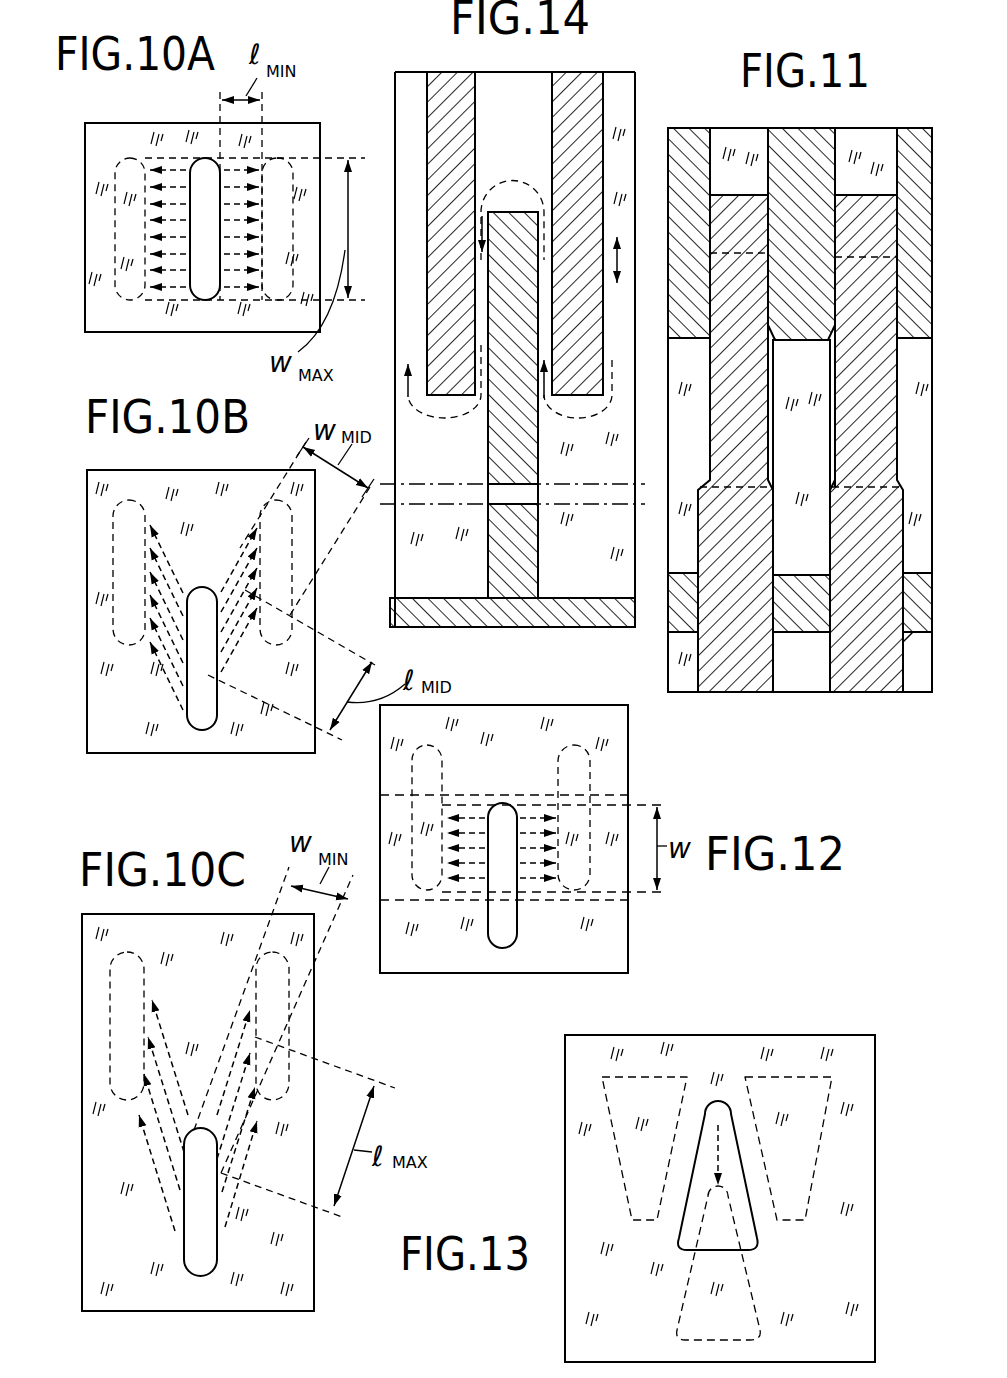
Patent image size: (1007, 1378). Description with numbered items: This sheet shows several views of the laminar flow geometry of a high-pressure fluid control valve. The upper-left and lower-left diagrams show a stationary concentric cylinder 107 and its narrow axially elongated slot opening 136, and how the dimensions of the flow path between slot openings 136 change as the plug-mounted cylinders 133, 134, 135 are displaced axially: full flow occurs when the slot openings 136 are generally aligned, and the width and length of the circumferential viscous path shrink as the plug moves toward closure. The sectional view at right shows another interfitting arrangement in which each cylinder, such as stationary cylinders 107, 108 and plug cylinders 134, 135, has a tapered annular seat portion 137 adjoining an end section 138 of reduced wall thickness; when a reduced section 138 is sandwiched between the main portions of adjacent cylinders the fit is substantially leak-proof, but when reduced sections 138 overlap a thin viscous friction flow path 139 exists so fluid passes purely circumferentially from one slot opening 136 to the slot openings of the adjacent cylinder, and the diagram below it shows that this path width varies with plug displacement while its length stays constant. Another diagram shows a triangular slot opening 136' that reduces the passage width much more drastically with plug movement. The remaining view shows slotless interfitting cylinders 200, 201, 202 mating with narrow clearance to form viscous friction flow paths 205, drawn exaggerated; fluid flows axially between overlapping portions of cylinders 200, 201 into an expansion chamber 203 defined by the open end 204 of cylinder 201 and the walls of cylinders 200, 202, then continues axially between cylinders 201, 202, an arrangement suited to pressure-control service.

In FIG. 10A, the concentric cylinder 107 is at (100, 148).
In FIG. 10B, the concentric cylinder 107 is at (144, 724).
In FIG. 10C, the concentric cylinder 107 is at (147, 1262).
In FIG. 11, the concentric cylinder 107 is at (860, 683).
In FIG. 11, the concentric cylinder 108 is at (732, 682).
In FIG. 14, the concentric cylinder 133 is at (519, 374).
In FIG. 11, the concentric cylinder 134 is at (802, 632).
In FIG. 12, the concentric cylinder 134 is at (615, 941).
In FIG. 13, the concentric cylinder 134 is at (721, 1055).
In FIG. 11, the concentric cylinder 135 is at (923, 634).
In FIG. 10A, the slot opening 136 is at (206, 267).
In FIG. 10B, the slot opening 136 is at (200, 695).
In FIG. 10C, the slot opening 136 is at (194, 1242).
In FIG. 11, the slot opening 136 is at (801, 584).
In FIG. 12, the slot opening 136 is at (533, 879).
In FIG. 13, the triangular slot opening 136' is at (755, 1195).
In FIG. 11, the tapered annular seat portion 137 is at (772, 343).
In FIG. 11, the end section of reduced wall thickness 138 is at (830, 403).
In FIG. 11, the viscous friction flow path 139 is at (835, 452).
In FIG. 12, the viscous friction flow path 139 is at (530, 800).
In FIG. 14, the slotless interfitting cylinder 200 is at (580, 88).
In FIG. 14, the slotless interfitting cylinder 201 is at (525, 553).
In FIG. 14, the slotless interfitting cylinder 202 is at (445, 80).
In FIG. 14, the expansion chamber 203 is at (540, 128).
In FIG. 14, the open end of cylinder 204 is at (513, 226).
In FIG. 14, the viscous friction flow path 205 is at (541, 340).